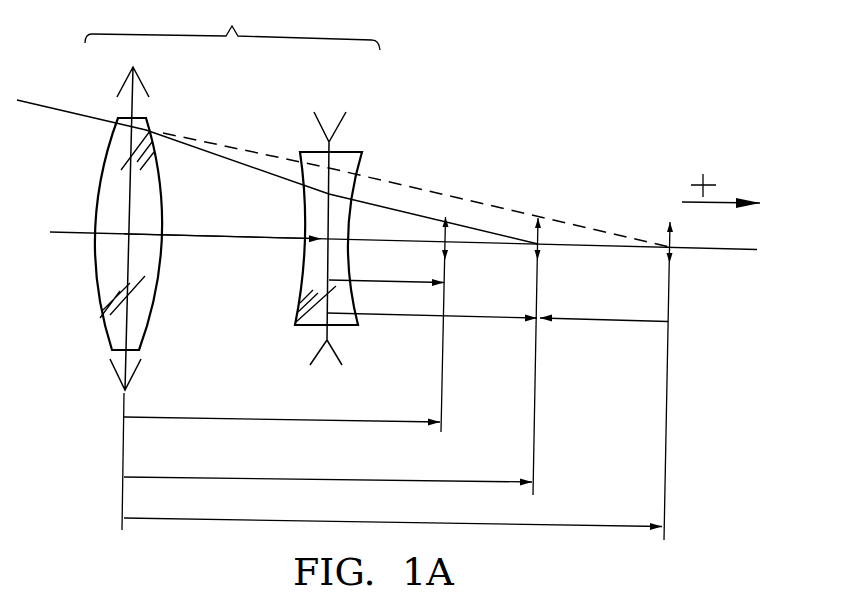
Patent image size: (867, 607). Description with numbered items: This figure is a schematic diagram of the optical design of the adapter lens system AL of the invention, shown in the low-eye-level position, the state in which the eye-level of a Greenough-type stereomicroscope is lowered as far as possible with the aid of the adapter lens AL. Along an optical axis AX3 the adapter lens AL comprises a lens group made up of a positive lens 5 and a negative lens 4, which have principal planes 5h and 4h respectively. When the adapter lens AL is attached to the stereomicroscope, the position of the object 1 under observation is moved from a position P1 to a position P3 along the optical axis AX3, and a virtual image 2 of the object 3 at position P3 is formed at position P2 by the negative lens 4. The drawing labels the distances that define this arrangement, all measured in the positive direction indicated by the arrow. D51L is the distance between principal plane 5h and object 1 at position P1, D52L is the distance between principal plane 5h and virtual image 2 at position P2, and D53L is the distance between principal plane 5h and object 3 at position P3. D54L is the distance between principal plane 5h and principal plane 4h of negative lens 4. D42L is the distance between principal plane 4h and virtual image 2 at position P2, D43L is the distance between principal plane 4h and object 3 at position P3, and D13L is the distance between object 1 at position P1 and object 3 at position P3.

The adapter lens system AL is at (232, 25).
The optical axis AX3 is at (733, 250).
The positive lens 5 is at (107, 158).
The principal plane of positive lens 5h is at (128, 110).
The negative lens 4 is at (363, 163).
The principal plane of negative lens 4h is at (327, 143).
The position P1 is at (668, 247).
The object 1 is at (672, 247).
The position P2 is at (447, 241).
The virtual image 2 is at (447, 244).
The position P3 is at (540, 243).
The object 3 is at (541, 246).
The distance between principal planes D54L is at (222, 224).
The distance from principal plane 4h to virtual image D42L is at (386, 265).
The distance from principal plane 4h to object at P3 D43L is at (432, 303).
The distance between object positions P1 and P3 D13L is at (604, 304).
The distance from principal plane 5h to virtual image D52L is at (282, 407).
The distance from principal plane 5h to object at P3 D53L is at (328, 467).
The distance from principal plane 5h to object at P1 D51L is at (393, 513).